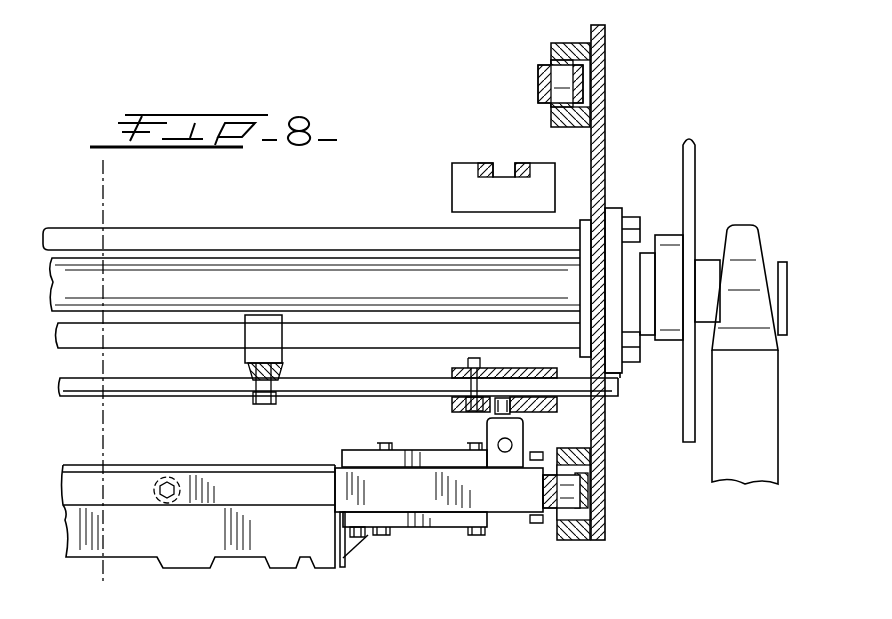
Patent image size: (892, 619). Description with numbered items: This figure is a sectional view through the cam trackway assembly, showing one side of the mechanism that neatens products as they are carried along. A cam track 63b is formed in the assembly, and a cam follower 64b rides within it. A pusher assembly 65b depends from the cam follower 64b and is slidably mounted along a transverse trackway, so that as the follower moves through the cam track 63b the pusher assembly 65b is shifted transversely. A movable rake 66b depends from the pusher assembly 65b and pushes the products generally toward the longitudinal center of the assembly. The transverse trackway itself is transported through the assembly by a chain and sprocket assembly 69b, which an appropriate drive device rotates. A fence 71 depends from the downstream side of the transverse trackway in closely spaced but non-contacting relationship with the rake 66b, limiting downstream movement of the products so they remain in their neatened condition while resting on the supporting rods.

The cam track 63b is at (468, 188).
The cam follower 64b is at (510, 420).
The pusher assembly 65b is at (445, 522).
The movable rake 66b is at (344, 558).
The chain and sprocket assembly 69b is at (539, 72).
The fence 71 is at (168, 538).